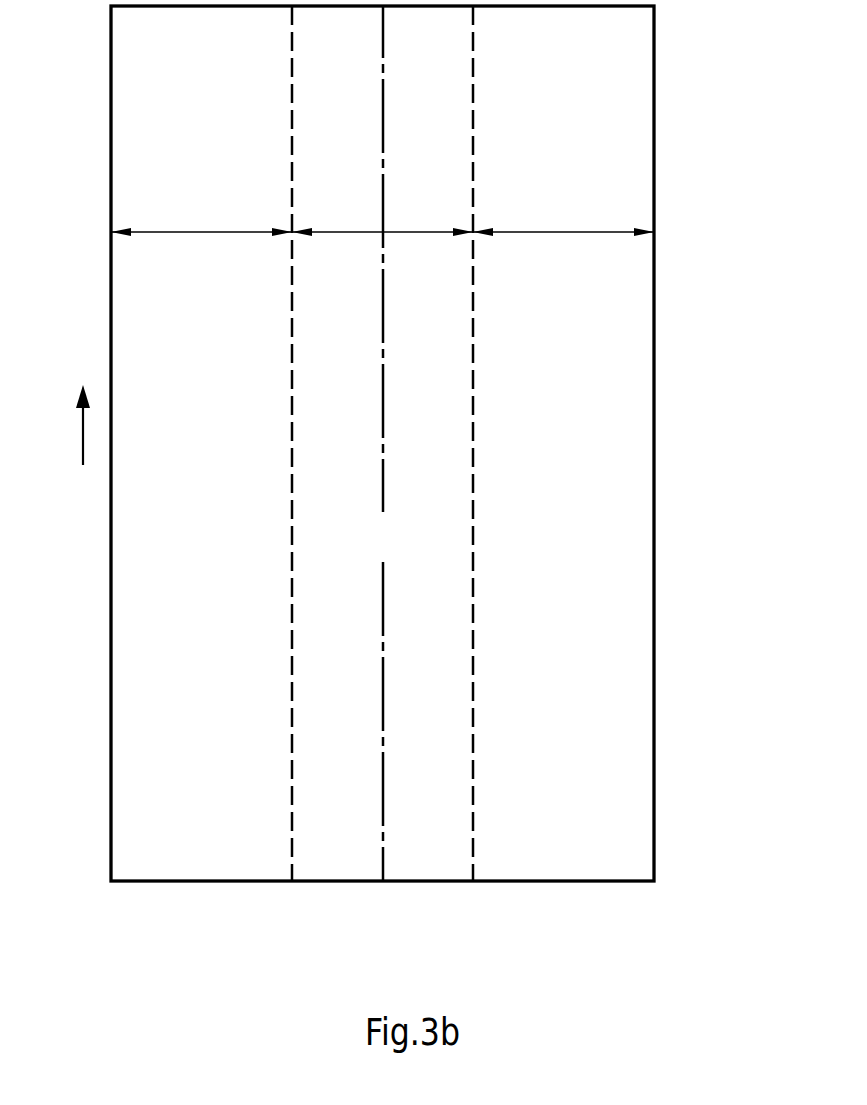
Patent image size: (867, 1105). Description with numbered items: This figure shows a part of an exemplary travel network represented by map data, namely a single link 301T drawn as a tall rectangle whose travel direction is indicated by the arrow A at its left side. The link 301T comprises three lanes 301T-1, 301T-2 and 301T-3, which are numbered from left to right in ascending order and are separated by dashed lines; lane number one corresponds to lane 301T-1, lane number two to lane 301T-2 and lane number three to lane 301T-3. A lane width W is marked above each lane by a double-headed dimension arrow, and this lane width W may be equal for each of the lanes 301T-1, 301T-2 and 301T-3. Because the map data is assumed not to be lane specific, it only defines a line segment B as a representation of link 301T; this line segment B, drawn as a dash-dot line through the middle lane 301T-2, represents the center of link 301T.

The link in travel direction T 301T is at (655, 378).
The lane number one of link 301T 301T-1 is at (243, 549).
The lane number two of link 301T 301T-2 is at (423, 549).
The lane number three of link 301T 301T-3 is at (607, 549).
The lane width W is at (382, 217).
The travel direction arrow A is at (82, 437).
The line segment B is at (383, 92).